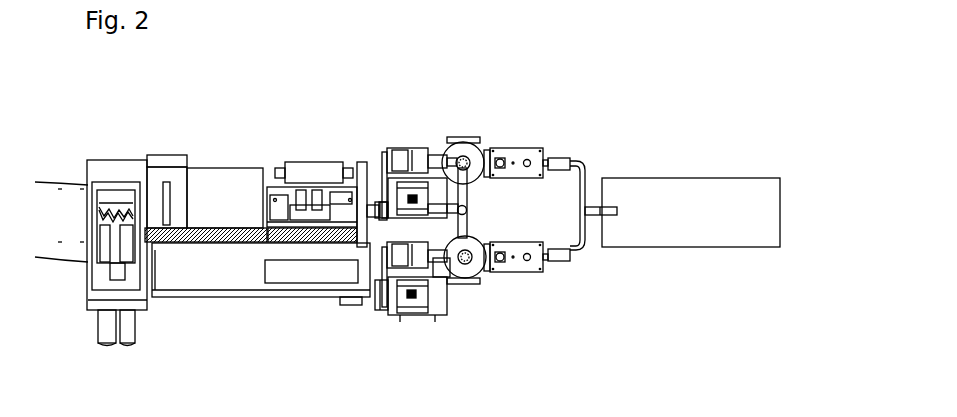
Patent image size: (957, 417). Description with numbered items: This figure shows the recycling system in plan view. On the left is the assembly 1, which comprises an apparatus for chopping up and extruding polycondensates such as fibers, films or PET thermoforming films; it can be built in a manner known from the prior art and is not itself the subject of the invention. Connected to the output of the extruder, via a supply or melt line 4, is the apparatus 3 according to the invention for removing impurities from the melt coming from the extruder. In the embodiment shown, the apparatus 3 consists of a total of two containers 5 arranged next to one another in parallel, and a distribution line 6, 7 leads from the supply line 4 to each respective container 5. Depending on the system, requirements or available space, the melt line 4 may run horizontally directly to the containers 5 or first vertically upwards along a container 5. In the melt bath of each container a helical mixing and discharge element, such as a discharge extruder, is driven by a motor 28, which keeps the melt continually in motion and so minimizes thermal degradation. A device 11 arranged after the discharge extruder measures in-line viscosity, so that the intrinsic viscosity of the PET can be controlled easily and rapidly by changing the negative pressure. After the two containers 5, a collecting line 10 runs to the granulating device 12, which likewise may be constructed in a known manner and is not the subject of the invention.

The assembly 1 is at (222, 138).
The apparatus 3 is at (485, 195).
The melt line 4 is at (427, 265).
The container 5 is at (478, 150).
The distribution line 6 is at (465, 237).
The distribution line 7 is at (462, 190).
The collecting line 10 is at (581, 207).
The device for measuring in-line viscosity 11 is at (566, 247).
The granulating device 12 is at (730, 202).
The motor 28 is at (435, 188).